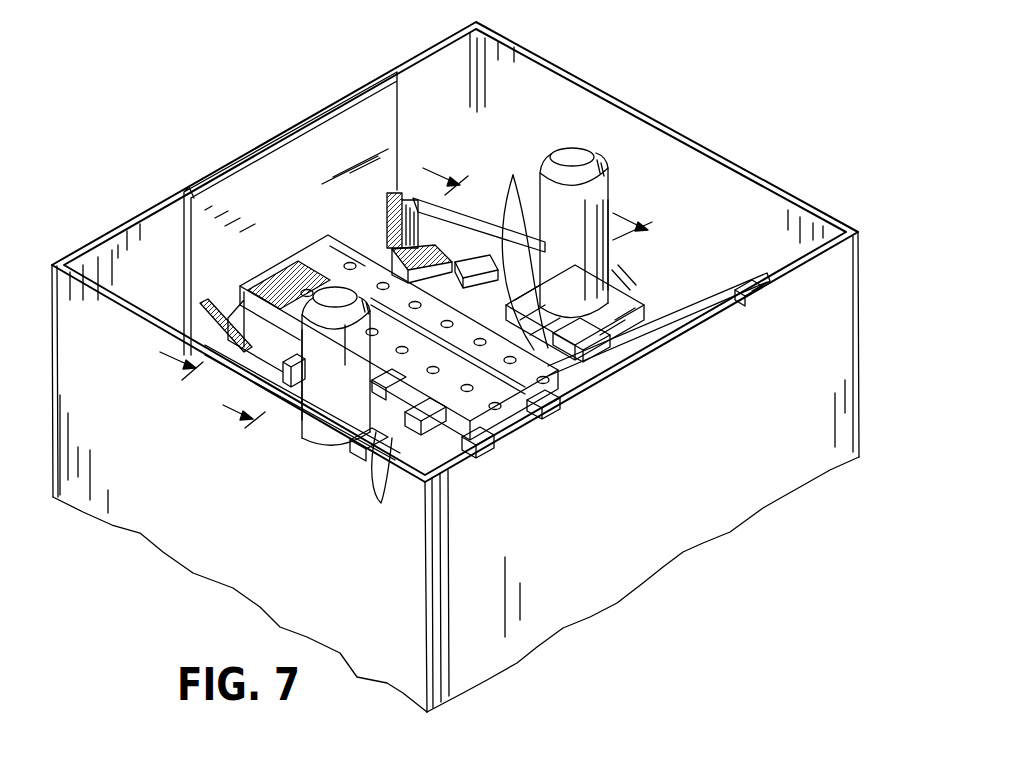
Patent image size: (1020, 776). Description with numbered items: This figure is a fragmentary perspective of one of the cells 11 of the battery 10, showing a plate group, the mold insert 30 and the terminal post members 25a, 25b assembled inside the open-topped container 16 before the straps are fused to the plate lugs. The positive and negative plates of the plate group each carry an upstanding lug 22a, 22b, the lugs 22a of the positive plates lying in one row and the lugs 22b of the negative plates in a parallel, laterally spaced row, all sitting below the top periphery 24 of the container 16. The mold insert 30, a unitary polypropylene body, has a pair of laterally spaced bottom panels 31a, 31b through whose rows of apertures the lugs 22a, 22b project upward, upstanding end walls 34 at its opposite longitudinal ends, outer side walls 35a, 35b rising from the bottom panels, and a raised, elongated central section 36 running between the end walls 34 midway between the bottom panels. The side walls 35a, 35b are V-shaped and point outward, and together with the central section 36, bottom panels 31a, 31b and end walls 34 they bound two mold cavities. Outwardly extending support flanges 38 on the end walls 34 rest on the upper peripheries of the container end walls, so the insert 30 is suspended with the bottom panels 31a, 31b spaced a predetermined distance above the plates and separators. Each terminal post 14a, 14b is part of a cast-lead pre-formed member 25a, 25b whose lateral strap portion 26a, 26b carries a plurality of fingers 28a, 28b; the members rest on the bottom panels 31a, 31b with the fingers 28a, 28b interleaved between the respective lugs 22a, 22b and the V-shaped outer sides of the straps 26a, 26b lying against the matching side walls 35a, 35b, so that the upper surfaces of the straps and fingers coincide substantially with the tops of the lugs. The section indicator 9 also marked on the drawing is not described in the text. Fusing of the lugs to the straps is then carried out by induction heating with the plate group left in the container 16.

The cell 11 is at (523, 83).
The container 16 is at (180, 540).
The top periphery 24 is at (120, 226).
The support flange 38 is at (232, 170).
The end wall 34 is at (320, 147).
The raised central section 36 is at (278, 284).
The positive terminal post 14a is at (587, 155).
The negative terminal post 14b is at (330, 300).
The terminal post member 25a is at (624, 195).
The terminal post member 25b is at (287, 334).
The strap portion 26a is at (652, 292).
The strap portion 26b is at (372, 442).
The finger 28a is at (568, 257).
The finger 28b is at (403, 453).
The mold insert 30 is at (387, 258).
The bottom panel 31a is at (421, 246).
The bottom panel 31b is at (285, 372).
The outer side wall 35a is at (416, 238).
The outer side wall 35b is at (258, 362).
The lug 22a is at (555, 396).
The lug 22b is at (477, 443).
The section line 9- 9 is at (318, 281).
The battery 10 is at (458, 328).